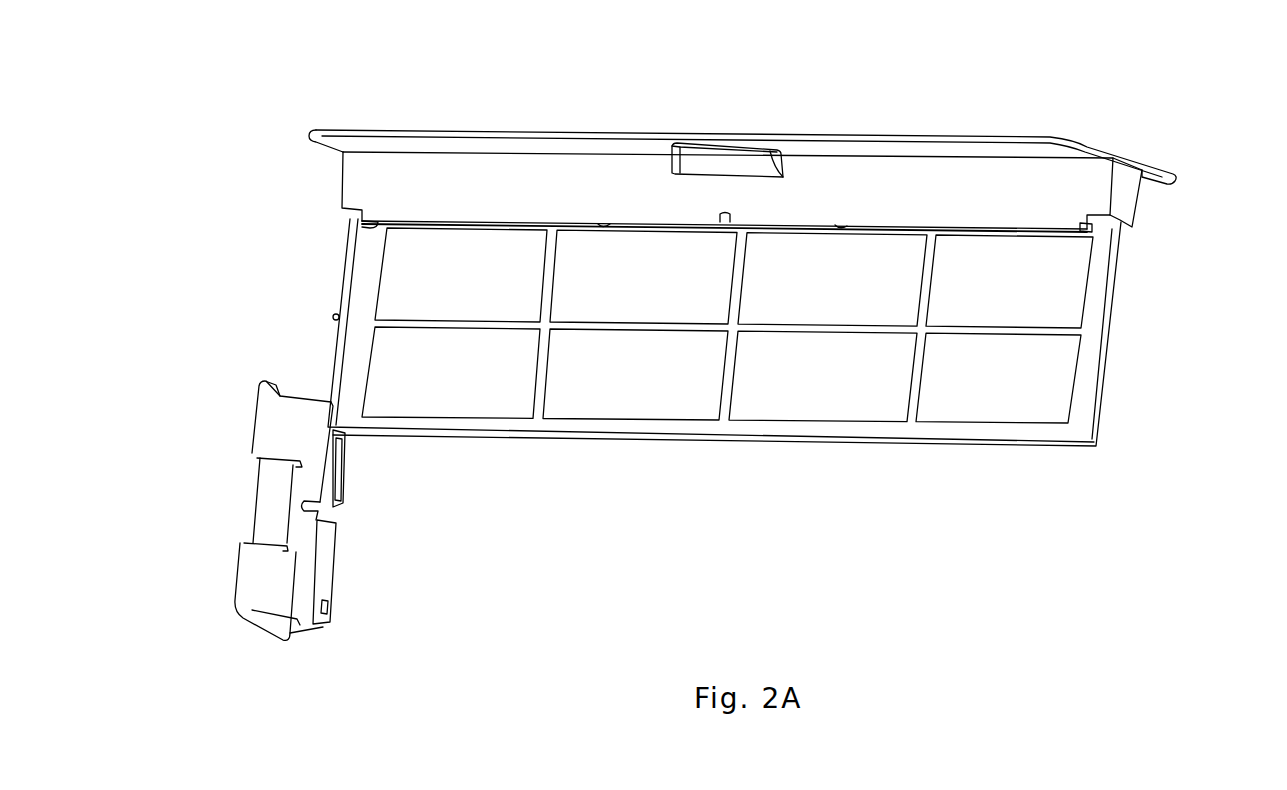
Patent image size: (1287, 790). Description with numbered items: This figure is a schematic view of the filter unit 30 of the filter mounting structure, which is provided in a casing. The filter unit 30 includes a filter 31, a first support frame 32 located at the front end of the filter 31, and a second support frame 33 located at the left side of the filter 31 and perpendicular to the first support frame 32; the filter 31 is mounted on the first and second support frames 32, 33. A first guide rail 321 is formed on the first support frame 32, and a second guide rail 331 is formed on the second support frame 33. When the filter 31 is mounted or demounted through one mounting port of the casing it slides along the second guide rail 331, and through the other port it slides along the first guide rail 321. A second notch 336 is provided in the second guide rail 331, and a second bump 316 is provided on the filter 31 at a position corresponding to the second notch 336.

The filter unit 30 is at (1157, 152).
The first support frame 32 is at (985, 195).
The first guide rail 321 is at (1003, 232).
The filter 31 is at (978, 407).
The second bump 316 is at (335, 317).
The second support frame 33 is at (311, 528).
The second guide rail 331 is at (317, 552).
The second notch 336 is at (313, 507).